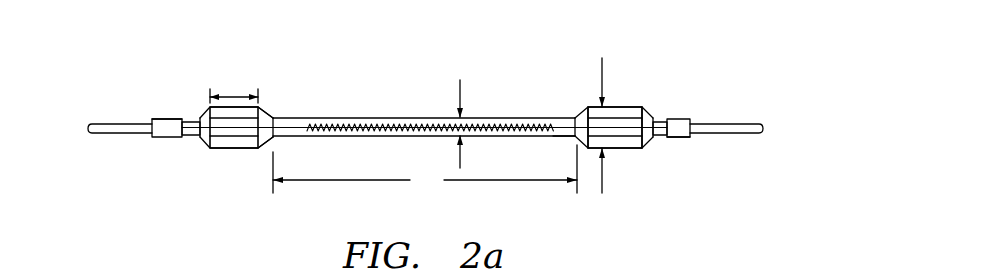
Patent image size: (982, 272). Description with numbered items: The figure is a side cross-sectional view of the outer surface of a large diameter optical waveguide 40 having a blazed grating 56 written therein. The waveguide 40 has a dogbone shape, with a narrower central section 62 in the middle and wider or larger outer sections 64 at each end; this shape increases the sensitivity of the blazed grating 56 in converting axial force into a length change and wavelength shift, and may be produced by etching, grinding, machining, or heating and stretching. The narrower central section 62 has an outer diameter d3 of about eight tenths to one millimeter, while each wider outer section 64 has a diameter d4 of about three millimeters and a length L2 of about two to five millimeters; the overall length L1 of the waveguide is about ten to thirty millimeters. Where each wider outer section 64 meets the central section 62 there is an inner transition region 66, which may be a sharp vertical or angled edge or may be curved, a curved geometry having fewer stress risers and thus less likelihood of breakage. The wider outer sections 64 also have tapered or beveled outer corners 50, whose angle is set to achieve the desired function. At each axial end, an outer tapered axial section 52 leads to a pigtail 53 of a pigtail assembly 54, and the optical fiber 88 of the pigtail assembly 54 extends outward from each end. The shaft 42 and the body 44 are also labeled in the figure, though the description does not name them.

The large diameter optical waveguide 40 is at (525, 78).
The shaft 42 is at (300, 118).
The enlarged body portion 44 is at (630, 112).
The tapered outer corners 50 is at (203, 150).
The outer tapered axial section 52 is at (195, 120).
The pigtail 53 is at (163, 119).
The pigtail assembly 54 is at (173, 147).
The blazed grating 56 is at (390, 120).
The narrower central section 62 is at (520, 137).
The wider outer sections 64 is at (238, 150).
The inner transition region 66 is at (265, 110).
The optical fiber 88 is at (102, 123).
The overall length L1 is at (425, 169).
The length of wider outer sections L2 is at (238, 88).
The outer diameter of narrower central section d3 is at (460, 168).
The diameter of wider outer sections d4 is at (603, 60).